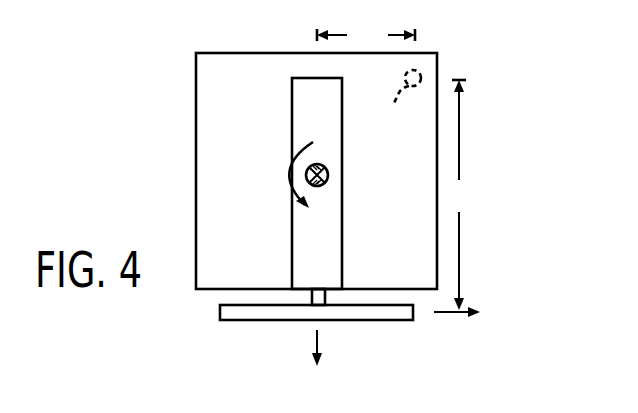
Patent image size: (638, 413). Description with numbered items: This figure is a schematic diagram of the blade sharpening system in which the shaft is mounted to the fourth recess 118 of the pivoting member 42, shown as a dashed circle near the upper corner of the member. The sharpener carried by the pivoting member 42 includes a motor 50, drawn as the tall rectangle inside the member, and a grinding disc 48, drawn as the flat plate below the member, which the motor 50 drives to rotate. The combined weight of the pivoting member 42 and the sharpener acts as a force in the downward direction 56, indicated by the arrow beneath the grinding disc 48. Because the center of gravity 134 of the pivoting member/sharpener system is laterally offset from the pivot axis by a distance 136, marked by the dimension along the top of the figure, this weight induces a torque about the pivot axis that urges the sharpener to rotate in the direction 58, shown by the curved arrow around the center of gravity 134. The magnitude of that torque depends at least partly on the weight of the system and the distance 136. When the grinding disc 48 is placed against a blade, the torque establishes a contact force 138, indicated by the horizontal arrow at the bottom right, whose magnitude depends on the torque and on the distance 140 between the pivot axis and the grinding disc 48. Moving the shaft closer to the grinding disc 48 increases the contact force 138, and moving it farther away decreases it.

The pivoting member 42 is at (196, 176).
The motor 50 is at (342, 230).
The grinding disc 48 is at (218, 307).
The center of gravity 134 is at (328, 178).
The direction 58 is at (290, 162).
The fourth recess 118 is at (400, 106).
The distance 136 is at (366, 36).
The distance 140 is at (460, 195).
The contact force 138 is at (449, 313).
The downward direction 56 is at (319, 336).